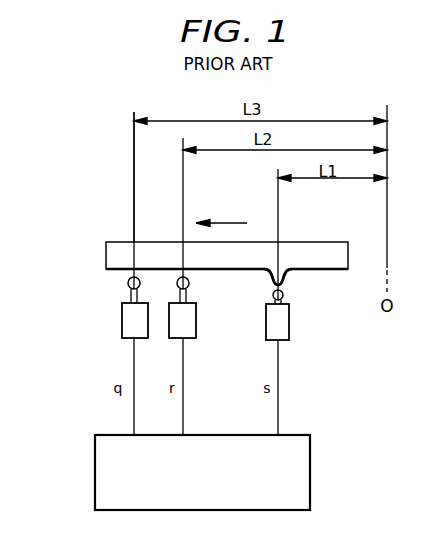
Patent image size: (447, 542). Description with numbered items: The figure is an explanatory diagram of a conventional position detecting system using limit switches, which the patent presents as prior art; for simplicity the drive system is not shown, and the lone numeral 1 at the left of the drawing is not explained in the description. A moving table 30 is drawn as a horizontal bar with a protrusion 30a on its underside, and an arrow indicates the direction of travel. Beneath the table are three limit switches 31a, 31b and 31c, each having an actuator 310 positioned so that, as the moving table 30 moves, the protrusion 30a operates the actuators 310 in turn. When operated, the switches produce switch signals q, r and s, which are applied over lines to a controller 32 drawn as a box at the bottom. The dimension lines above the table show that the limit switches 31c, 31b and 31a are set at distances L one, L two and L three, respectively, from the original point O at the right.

The reference line 1 is at (88, 203).
The moving table 30 is at (322, 242).
The protrusion 30a is at (286, 275).
The actuators 310 is at (128, 286).
The limit switch 31a is at (122, 322).
The limit switch 31b is at (196, 325).
The limit switch 31c is at (289, 325).
The controller 32 is at (310, 475).